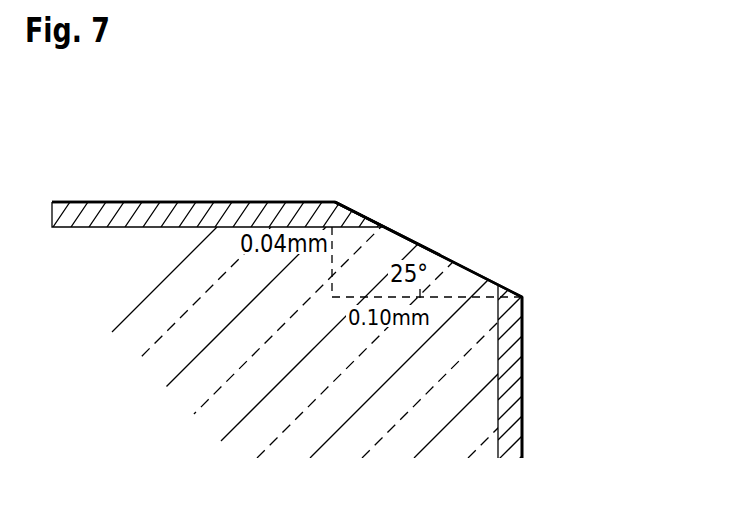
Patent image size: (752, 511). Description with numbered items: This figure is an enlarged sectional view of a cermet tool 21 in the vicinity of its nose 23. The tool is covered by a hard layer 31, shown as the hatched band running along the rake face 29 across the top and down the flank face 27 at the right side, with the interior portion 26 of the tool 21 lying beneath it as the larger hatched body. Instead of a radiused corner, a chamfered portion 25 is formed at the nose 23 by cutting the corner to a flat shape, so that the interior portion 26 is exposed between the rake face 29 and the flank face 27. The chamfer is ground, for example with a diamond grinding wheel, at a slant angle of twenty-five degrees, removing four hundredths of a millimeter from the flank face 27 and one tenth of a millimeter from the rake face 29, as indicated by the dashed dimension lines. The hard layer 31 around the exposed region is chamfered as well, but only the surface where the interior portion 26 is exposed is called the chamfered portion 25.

The cermet tool 21 is at (556, 177).
The nose 23 is at (448, 219).
The chamfered portion 25 is at (445, 258).
The interior portion 26 is at (428, 367).
The flank face 27 is at (523, 432).
The rake face 29 is at (150, 202).
The hard layer 31 is at (287, 202).